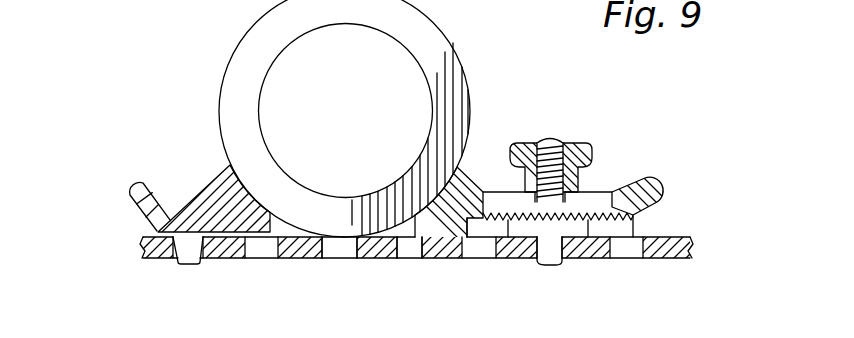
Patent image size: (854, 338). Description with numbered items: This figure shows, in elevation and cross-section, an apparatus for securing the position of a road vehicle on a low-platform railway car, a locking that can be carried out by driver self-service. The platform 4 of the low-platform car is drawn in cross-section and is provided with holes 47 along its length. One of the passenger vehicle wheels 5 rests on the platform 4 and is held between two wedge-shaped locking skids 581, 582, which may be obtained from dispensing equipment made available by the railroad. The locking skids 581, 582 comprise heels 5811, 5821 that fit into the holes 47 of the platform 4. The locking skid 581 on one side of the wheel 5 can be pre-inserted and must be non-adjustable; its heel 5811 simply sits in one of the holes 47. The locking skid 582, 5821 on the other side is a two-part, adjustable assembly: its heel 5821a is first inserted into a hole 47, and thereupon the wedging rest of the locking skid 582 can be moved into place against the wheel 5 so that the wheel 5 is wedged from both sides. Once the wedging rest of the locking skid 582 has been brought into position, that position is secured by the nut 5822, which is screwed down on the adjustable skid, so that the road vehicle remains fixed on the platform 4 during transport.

The platform of the low-platform car 4 is at (298, 258).
The passenger vehicle wheel 5 is at (438, 58).
The holes of the platform 47 is at (405, 250).
The locking skid 581 is at (202, 200).
The heel 5811 is at (183, 264).
The locking skid 582 is at (458, 197).
The heel 5821 is at (525, 223).
The heel 5821a is at (552, 258).
The nut 5822 is at (596, 158).